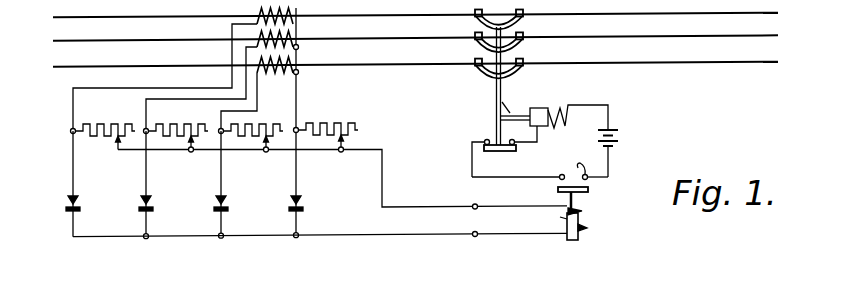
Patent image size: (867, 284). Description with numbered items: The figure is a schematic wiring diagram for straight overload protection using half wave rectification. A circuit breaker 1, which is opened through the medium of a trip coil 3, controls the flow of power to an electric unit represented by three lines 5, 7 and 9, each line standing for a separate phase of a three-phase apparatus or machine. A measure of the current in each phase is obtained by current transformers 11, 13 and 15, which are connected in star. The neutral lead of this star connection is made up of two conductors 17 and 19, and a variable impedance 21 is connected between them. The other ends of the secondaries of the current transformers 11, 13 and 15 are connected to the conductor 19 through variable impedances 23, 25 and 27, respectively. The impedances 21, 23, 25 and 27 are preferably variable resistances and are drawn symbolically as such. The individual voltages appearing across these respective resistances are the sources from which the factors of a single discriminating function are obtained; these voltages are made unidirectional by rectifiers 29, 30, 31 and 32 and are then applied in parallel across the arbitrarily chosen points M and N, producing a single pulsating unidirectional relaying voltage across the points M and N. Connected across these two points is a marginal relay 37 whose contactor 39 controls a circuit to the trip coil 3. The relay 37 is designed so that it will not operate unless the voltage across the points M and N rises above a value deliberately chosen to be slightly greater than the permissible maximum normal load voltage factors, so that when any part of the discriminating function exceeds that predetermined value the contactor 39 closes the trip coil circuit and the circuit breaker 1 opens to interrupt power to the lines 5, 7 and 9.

The circuit breaker 1 is at (540, 89).
The trip coil 3 is at (540, 108).
The line 5 is at (647, 14).
The line 7 is at (647, 37).
The line 9 is at (657, 63).
The current transformer 11 is at (293, 9).
The current transformer 13 is at (260, 33).
The current transformer 15 is at (298, 59).
The conductor 17 is at (300, 107).
The conductor 19 is at (314, 151).
The variable impedance 21 is at (329, 112).
The variable impedance 23 is at (125, 120).
The variable impedance 25 is at (198, 120).
The variable impedance 27 is at (255, 123).
The rectifier 29 is at (78, 200).
The rectifier 30 is at (151, 200).
The rectifier 31 is at (226, 200).
The rectifier 32 is at (301, 200).
The marginal relay 37 is at (622, 216).
The contactor 39 is at (540, 169).
The point M is at (475, 198).
The point N is at (320, 227).